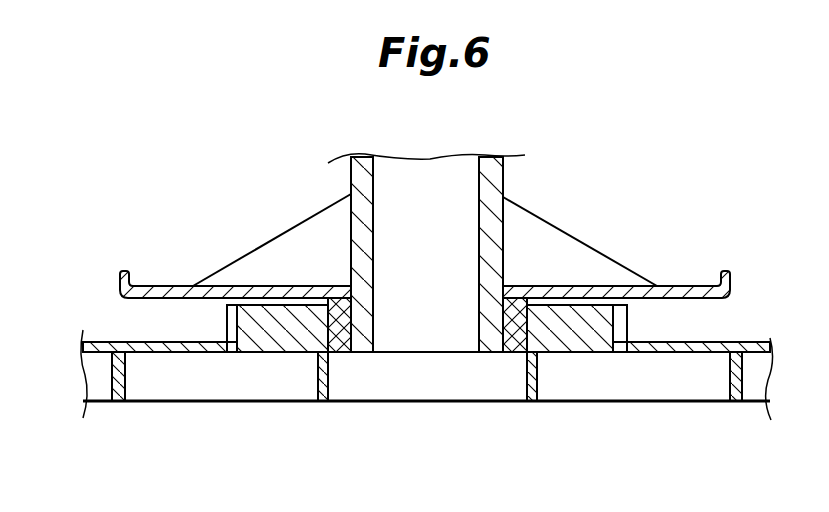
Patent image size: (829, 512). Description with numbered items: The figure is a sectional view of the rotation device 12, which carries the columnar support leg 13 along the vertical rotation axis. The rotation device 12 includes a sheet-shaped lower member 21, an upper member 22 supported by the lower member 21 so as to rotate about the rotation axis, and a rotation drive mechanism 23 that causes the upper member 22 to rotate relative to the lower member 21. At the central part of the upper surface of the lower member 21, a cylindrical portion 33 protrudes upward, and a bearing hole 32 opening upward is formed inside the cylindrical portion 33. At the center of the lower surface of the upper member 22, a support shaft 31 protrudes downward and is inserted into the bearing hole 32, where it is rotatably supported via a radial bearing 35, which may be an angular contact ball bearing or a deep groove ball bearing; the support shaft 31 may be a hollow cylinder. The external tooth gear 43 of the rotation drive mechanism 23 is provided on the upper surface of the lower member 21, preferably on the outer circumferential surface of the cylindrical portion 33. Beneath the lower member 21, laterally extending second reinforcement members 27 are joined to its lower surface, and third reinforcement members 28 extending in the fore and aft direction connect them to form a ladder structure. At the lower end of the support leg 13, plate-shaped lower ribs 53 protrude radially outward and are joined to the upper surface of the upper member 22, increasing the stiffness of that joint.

The rotation device 12 is at (113, 237).
The support leg 13 is at (505, 178).
The lower member 21 is at (753, 342).
The upper member 22 is at (684, 287).
The rotation drive mechanism 23 is at (105, 312).
The second reinforcement member 27 is at (455, 378).
The third reinforcement member 28 is at (323, 387).
The support shaft 31 is at (362, 346).
The bearing hole 32 is at (345, 297).
The cylindrical portion 33 is at (265, 310).
The radial bearing 35 is at (340, 344).
The external tooth gear 43 is at (628, 323).
The lower rib 53 is at (298, 232).